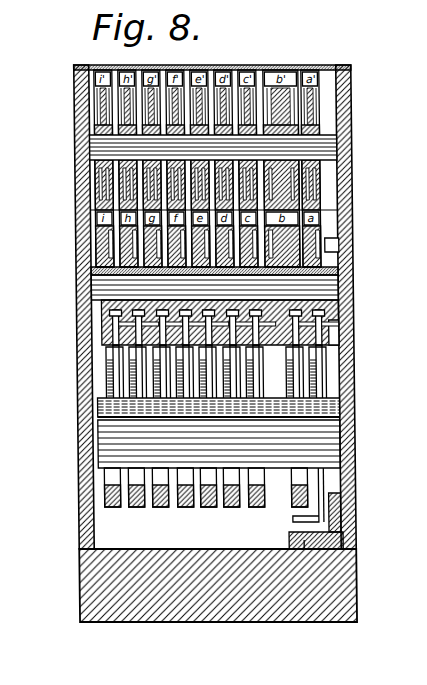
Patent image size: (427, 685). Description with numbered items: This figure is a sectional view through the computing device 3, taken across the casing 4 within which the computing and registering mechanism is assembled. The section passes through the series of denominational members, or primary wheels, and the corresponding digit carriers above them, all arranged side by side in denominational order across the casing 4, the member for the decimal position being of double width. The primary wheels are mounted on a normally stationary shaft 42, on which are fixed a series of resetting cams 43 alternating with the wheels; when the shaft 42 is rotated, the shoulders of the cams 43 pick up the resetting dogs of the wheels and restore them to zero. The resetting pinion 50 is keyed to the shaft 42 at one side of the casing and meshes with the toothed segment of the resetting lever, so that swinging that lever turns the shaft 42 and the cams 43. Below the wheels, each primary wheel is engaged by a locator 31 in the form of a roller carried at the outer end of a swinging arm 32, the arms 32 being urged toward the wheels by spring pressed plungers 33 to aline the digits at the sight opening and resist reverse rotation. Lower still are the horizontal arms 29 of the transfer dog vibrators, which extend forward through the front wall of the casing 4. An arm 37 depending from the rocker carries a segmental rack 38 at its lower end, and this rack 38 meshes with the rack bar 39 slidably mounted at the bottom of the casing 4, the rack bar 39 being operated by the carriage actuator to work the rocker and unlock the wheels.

The computing device 3 is at (188, 615).
The casing 4 is at (73, 101).
The horizontal arm 29 is at (110, 508).
The locator 31 is at (104, 352).
The swinging arm 32 is at (100, 378).
The spring pressed plunger 33 is at (154, 420).
The arm 37 is at (296, 514).
The segmental rack 38 is at (284, 530).
The rack bar 39 is at (298, 549).
The shaft 42 is at (80, 285).
The resetting cam 43 is at (100, 270).
The resetting pinion 50 is at (337, 245).